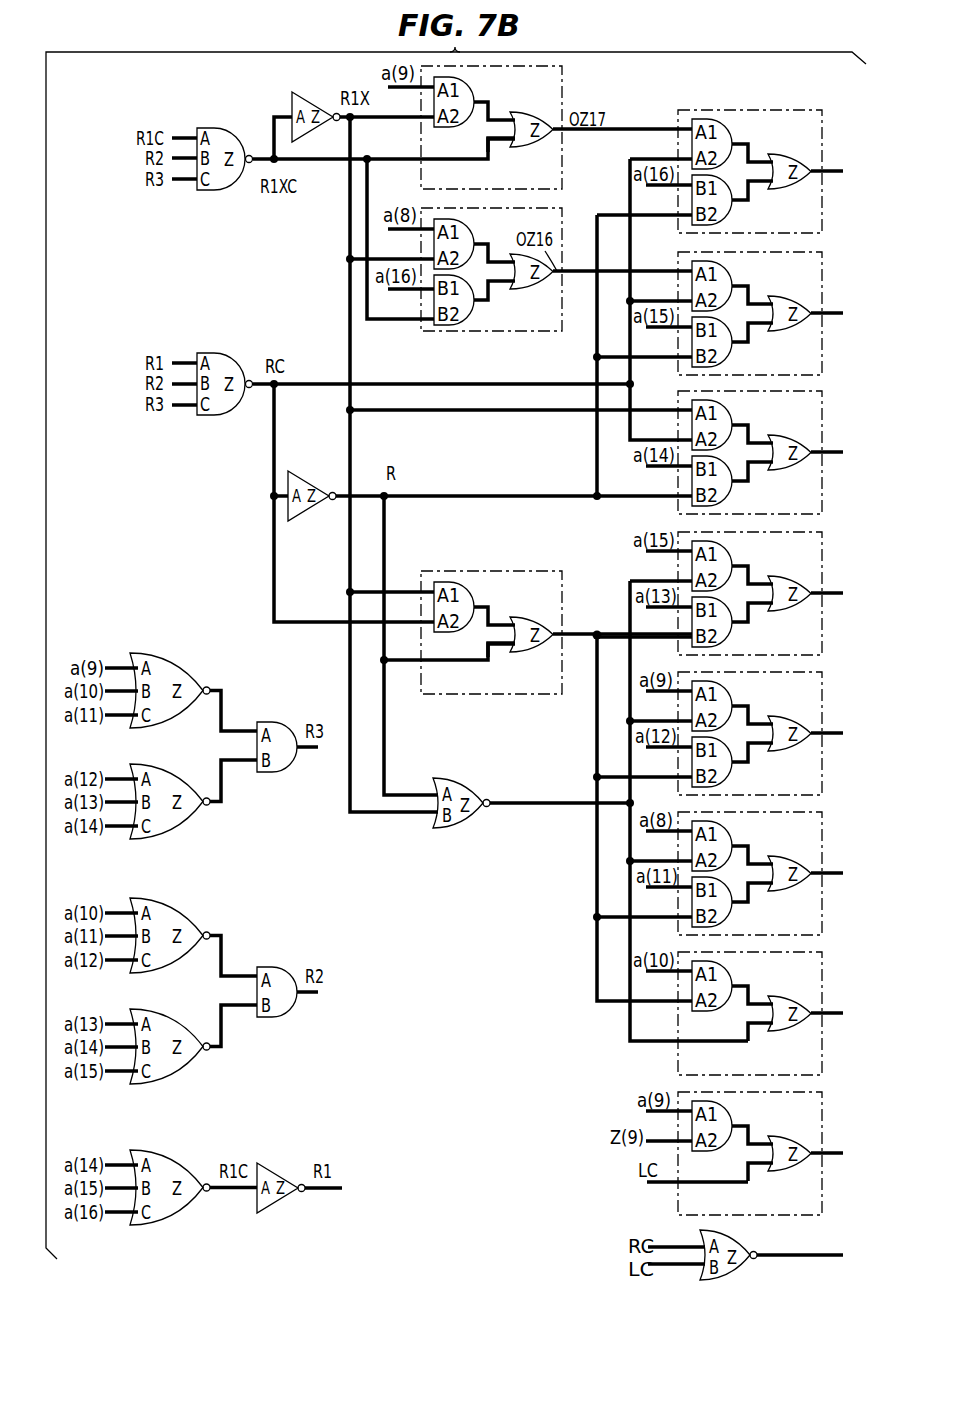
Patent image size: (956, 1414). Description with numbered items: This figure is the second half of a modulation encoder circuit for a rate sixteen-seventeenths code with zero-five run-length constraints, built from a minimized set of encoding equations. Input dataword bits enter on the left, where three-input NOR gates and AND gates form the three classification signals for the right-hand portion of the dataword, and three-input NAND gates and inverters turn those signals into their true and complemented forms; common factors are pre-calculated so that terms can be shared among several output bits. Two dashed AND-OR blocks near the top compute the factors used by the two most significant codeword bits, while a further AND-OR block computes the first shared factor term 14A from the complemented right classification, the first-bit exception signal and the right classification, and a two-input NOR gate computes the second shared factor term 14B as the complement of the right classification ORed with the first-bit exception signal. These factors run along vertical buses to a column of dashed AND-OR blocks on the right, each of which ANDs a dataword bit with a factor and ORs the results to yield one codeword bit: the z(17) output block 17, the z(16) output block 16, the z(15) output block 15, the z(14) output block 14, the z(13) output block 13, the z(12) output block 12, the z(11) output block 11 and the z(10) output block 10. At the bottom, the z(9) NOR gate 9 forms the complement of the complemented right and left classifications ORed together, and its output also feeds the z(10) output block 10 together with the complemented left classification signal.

The codeword bit z(17) output block 17 is at (779, 171).
The codeword bit z(16) output block 16 is at (779, 313).
The codeword bit z(15) output block 15 is at (779, 452).
The codeword bit z(14) output block 14 is at (779, 593).
The codeword bit z(13) output block 13 is at (779, 733).
The codeword bit z(12) output block 12 is at (779, 873).
The codeword bit z(11) output block 11 is at (779, 1013).
The codeword bit z(10) output block 10 is at (779, 1153).
The codeword bit z(9) NOR gate 9 is at (786, 1250).
The OZ14A factor term 14A is at (597, 748).
The OZ14B factor term 14B is at (483, 801).